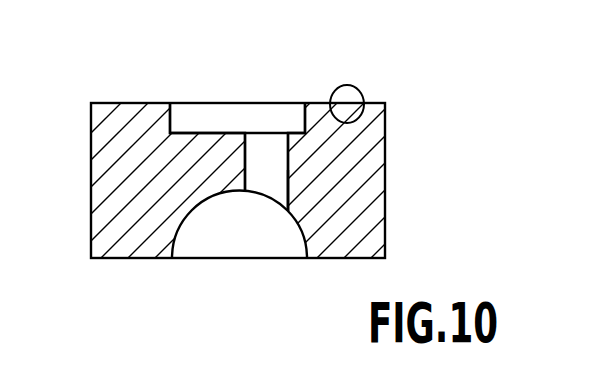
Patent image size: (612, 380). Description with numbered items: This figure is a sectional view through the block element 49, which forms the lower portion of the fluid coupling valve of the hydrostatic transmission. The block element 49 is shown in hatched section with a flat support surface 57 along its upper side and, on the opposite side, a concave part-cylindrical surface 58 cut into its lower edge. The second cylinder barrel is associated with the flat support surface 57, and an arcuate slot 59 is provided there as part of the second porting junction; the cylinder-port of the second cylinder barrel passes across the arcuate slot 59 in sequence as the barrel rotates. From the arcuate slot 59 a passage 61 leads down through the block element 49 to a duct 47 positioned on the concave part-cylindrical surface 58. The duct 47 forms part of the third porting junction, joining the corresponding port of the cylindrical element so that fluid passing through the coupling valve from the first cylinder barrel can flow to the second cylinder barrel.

The duct 47 is at (275, 197).
The block element 49 is at (386, 240).
The flat support surface 57 is at (310, 122).
The concave part-cylindrical surface 58 is at (187, 218).
The arcuate slot 59 is at (193, 101).
The passage 61 is at (267, 155).